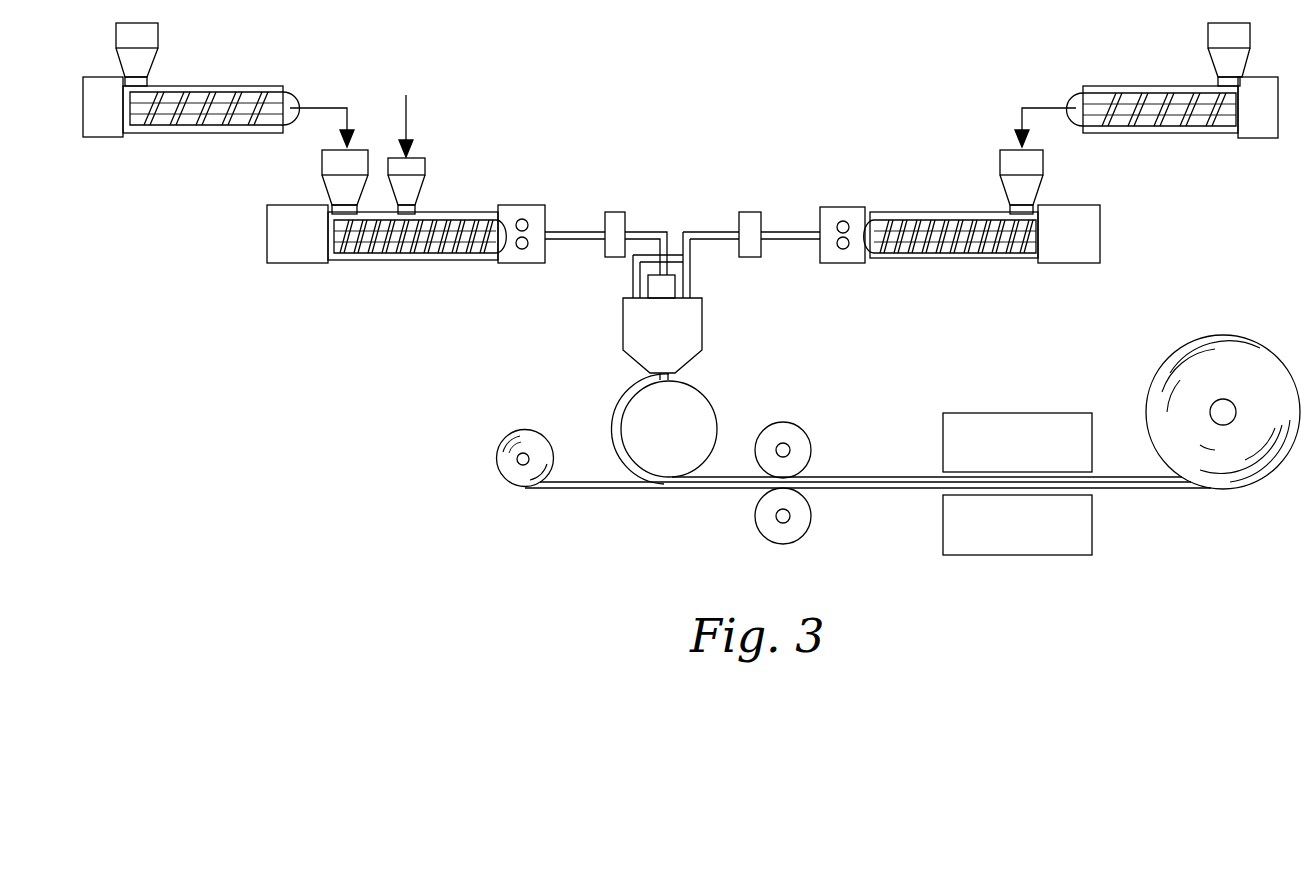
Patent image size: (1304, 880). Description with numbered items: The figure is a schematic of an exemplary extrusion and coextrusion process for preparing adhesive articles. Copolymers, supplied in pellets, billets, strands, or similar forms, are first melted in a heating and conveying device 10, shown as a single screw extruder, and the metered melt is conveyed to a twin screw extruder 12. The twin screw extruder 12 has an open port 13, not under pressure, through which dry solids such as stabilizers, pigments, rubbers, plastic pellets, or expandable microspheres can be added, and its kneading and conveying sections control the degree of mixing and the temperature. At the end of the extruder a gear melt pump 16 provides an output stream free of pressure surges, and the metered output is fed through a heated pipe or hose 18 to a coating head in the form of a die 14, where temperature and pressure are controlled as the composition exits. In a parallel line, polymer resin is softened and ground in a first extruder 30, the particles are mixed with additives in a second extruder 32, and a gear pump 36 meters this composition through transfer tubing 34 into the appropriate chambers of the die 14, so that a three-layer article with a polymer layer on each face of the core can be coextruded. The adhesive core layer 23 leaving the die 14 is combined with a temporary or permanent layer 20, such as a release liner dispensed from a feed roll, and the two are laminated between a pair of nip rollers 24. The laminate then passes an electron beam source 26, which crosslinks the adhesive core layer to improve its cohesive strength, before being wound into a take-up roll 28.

The heating and conveying device 10 is at (213, 85).
The twin screw extruder 12 is at (295, 263).
The open port 13 is at (425, 166).
The die 14 is at (623, 323).
The gear melt pump 16 is at (518, 205).
The heated pipe or hose 18 is at (649, 228).
The temporary or permanent layer 20 is at (587, 490).
The adhesive core layer 23 is at (626, 400).
The nip rollers 24 is at (791, 423).
The electron beam source 26 is at (1030, 413).
The take-up roll 28 is at (1268, 358).
The first extruder 30 is at (1137, 86).
The second extruder 32 is at (1102, 226).
The transfer tubing 34 is at (785, 228).
The gear pump 36 is at (843, 207).